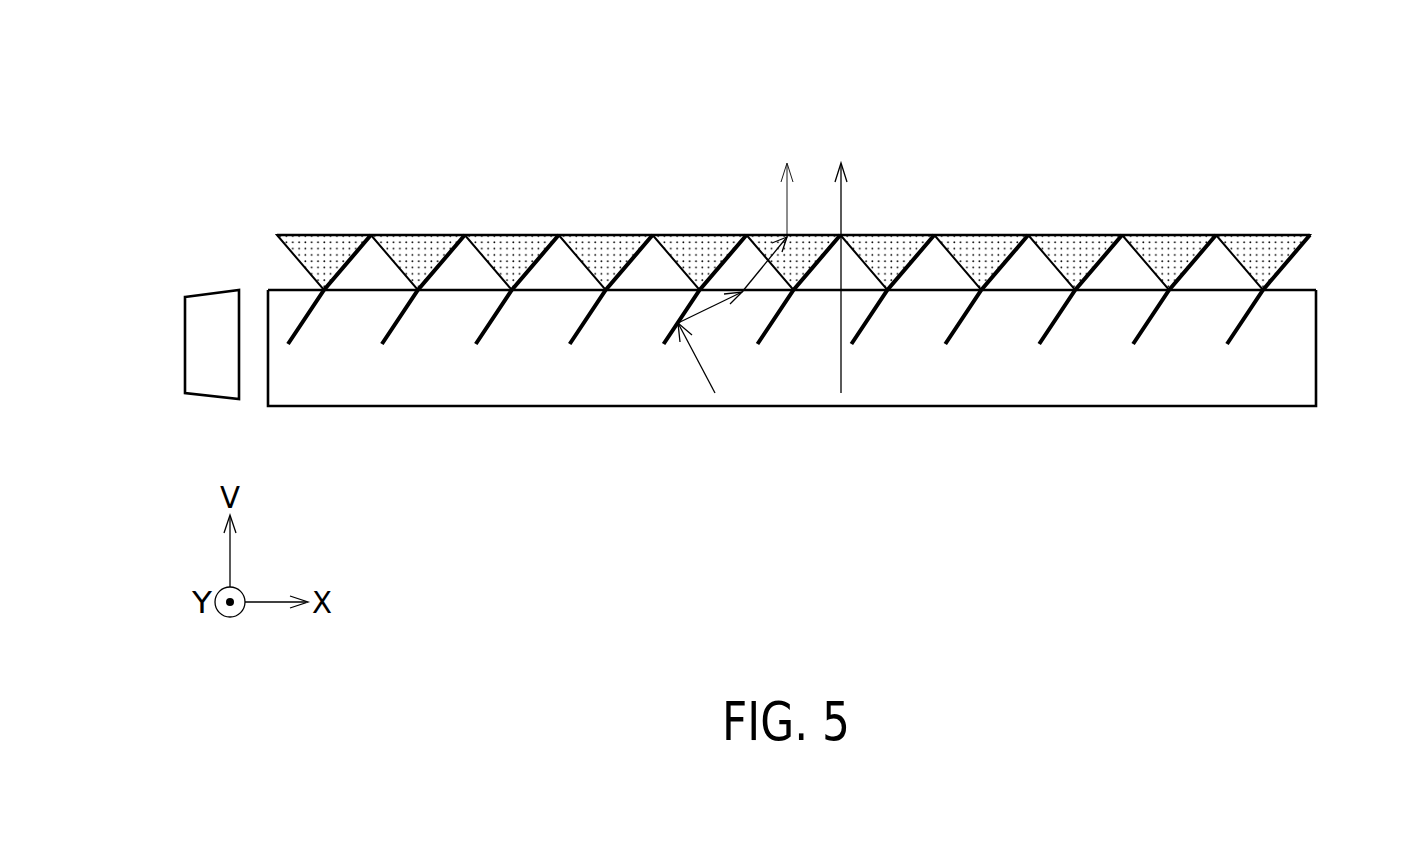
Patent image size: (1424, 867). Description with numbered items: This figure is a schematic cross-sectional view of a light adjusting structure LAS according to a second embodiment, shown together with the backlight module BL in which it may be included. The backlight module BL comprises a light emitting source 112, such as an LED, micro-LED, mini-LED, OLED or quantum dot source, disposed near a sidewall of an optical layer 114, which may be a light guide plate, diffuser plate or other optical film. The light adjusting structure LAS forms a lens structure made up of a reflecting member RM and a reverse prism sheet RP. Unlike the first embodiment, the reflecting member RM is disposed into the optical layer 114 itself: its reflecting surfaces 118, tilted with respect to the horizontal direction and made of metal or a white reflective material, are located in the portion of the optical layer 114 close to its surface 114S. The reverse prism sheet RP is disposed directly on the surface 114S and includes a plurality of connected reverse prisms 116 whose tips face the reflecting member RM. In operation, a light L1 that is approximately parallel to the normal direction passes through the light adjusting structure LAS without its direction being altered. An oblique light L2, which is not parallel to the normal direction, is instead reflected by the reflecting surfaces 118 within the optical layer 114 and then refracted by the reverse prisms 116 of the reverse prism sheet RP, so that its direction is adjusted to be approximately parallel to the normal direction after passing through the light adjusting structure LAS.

The light adjusting structure LAS is at (1220, 135).
The backlight module BL is at (100, 238).
The light emitting source 112 is at (200, 343).
The optical layer 114 is at (283, 395).
The surface of the optical layer 114S is at (292, 288).
The reverse prisms 116 is at (510, 250).
The reflecting surfaces 118 is at (495, 320).
The reverse prism sheet RP is at (1311, 254).
The reflecting member RM is at (1283, 308).
The light L1 is at (842, 372).
The oblique light L2 is at (704, 369).